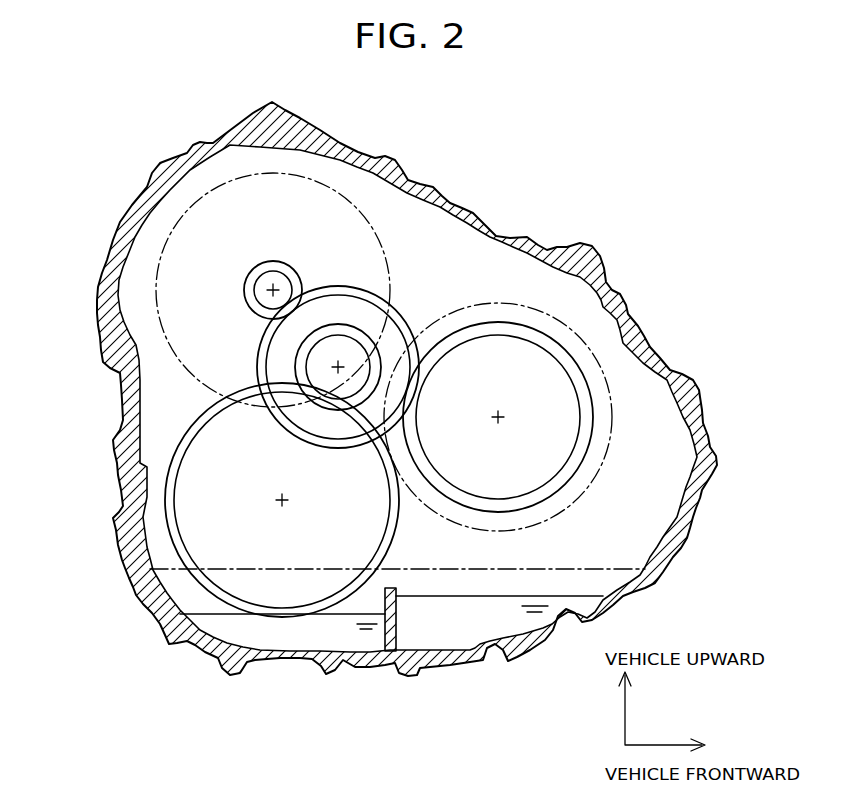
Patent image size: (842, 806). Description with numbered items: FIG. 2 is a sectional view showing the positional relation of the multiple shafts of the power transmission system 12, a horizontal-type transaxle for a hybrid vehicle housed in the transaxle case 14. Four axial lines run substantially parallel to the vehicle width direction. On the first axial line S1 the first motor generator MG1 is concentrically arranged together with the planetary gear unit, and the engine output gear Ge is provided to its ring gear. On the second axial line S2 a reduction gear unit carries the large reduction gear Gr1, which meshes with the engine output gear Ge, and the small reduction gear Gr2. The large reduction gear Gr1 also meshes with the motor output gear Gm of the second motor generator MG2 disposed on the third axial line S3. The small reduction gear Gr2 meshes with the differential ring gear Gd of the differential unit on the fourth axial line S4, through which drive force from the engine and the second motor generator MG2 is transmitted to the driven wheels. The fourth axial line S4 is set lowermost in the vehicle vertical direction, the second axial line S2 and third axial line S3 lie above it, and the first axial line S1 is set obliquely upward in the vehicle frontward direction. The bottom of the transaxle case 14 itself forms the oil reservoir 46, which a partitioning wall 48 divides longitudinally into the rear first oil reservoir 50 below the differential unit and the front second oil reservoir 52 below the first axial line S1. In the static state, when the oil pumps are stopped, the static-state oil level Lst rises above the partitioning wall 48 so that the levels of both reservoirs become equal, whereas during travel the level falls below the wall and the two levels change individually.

The power transmission system 12 is at (563, 136).
The transaxle case 14 is at (630, 327).
The oil reservoir 46 is at (623, 566).
The partitioning wall 48 is at (400, 627).
The first oil reservoir 50 is at (280, 643).
The second oil reservoir 52 is at (497, 627).
The first motor generator MG1 is at (614, 416).
The second motor generator MG2 is at (193, 197).
The engine output gear Ge is at (550, 337).
The large reduction gear Gr1 is at (400, 314).
The small reduction gear Gr2 is at (295, 368).
The motor output gear Gm is at (245, 291).
The differential ring gear Gd is at (170, 528).
The first axial line S1 is at (509, 409).
The second axial line S2 is at (347, 358).
The third axial line S3 is at (270, 286).
The fourth axial line S4 is at (273, 491).
The static-state oil level Lst is at (397, 556).